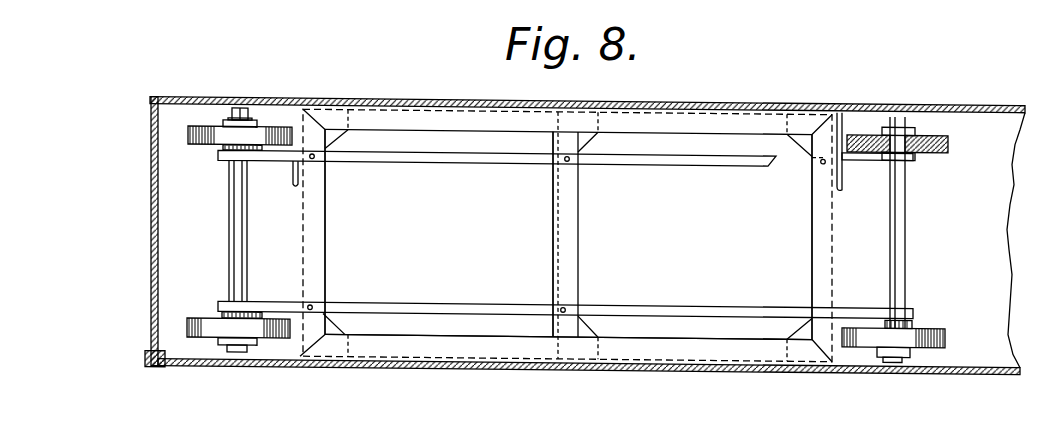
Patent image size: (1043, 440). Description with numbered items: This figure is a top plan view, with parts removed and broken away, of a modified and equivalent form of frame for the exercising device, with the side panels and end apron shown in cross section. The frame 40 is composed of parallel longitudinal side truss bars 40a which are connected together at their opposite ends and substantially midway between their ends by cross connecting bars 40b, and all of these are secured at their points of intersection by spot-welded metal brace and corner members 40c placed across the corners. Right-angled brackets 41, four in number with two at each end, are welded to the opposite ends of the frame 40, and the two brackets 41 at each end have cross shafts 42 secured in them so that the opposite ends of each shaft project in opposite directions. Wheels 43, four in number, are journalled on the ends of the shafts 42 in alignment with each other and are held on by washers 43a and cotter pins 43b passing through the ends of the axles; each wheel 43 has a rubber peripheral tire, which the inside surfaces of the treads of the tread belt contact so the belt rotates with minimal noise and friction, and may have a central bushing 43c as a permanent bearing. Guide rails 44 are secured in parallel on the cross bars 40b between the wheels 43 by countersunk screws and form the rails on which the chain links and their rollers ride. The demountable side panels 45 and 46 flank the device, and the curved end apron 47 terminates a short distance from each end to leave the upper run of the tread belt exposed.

The frame 40 is at (623, 352).
The side truss bars 40a is at (423, 342).
The cross connecting bars 40b is at (323, 230).
The brace and corner members 40c is at (345, 309).
The right-angled brackets 41 is at (843, 102).
The cross shafts 42 is at (233, 288).
The wheels 43 is at (213, 334).
The washers 43a is at (262, 345).
The cotter pins 43b is at (882, 355).
The central bushing 43c is at (925, 126).
The guide rails 44 is at (605, 168).
The side panel 45 is at (710, 368).
The side panel 46 is at (767, 101).
The curved end apron 47 is at (152, 234).